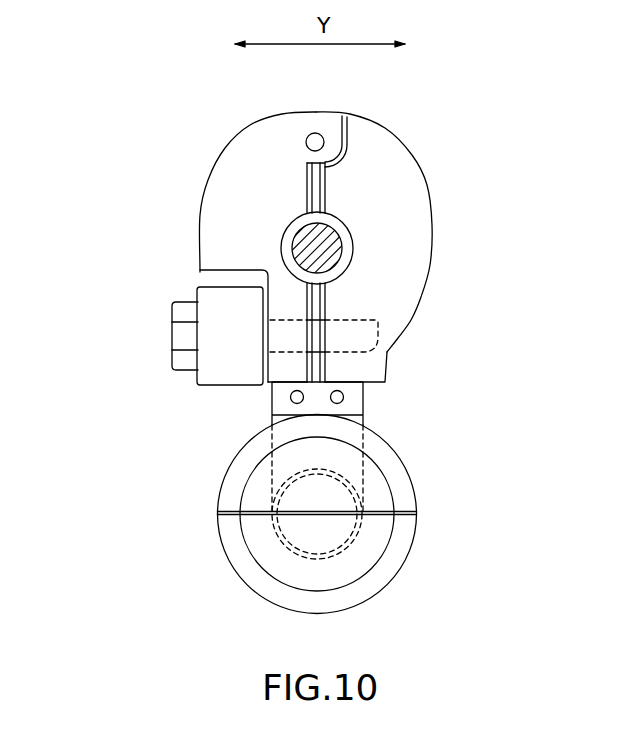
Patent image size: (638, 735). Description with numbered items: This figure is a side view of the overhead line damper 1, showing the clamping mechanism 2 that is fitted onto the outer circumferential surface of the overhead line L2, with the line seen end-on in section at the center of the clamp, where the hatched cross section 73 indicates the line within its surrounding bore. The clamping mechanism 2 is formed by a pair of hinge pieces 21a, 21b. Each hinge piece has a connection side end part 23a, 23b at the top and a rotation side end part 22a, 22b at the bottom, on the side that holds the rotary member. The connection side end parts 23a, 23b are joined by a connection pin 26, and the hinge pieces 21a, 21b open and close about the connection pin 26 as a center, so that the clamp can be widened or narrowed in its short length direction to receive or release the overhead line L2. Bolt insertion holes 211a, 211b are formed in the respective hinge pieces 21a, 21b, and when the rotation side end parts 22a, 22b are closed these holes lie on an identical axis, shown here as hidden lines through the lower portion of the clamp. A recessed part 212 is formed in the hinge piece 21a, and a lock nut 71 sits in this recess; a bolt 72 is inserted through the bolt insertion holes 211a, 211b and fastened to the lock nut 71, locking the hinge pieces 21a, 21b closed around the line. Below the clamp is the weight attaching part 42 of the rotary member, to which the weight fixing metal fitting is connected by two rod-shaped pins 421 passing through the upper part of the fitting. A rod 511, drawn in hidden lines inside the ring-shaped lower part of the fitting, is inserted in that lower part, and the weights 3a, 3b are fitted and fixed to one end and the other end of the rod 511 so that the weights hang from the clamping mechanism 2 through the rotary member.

The overhead line damper 1 is at (167, 143).
The clamping mechanism 2 is at (450, 162).
The hinge piece 21a is at (198, 228).
The hinge piece 21b is at (435, 212).
The rotation side end part 22a is at (268, 392).
The rotation side end part 22b is at (373, 385).
The connection side end part 23a is at (317, 118).
The connection side end part 23b is at (365, 118).
The connection pin 26 is at (308, 143).
The recessed part 212 is at (213, 277).
The bolt insertion hole 211a is at (293, 350).
The bolt insertion hole 211b is at (392, 333).
The lock nut 71 is at (218, 390).
The bolt 72 is at (172, 323).
The shaft 73 is at (343, 256).
The overhead line L2 is at (353, 237).
The weight attaching part 42 is at (370, 420).
The pin 421 is at (288, 402).
The weight 3a is at (407, 553).
The weight 3b is at (317, 514).
The rod 511 is at (330, 530).